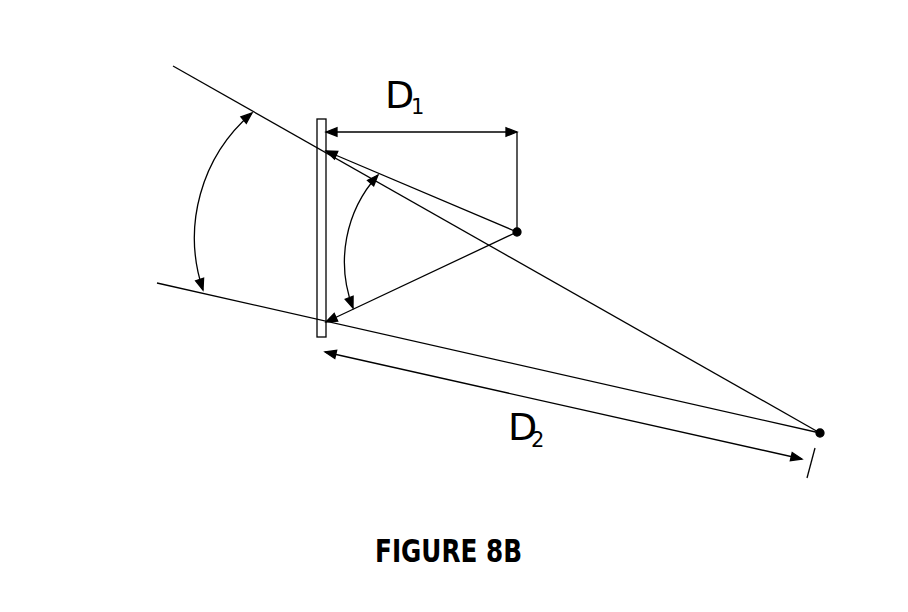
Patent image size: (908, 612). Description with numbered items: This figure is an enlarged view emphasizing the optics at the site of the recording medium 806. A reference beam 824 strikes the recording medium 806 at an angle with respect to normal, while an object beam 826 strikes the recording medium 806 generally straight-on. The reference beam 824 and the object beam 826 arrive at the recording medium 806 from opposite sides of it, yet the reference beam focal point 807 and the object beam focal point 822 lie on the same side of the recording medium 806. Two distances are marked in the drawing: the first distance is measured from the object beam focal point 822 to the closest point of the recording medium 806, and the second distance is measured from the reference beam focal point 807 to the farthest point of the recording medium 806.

The recording medium 806 is at (318, 338).
The reference beam focal point 807 is at (826, 428).
The object beam focal point 822 is at (519, 229).
The reference beam 824 is at (205, 200).
The object beam 826 is at (350, 237).